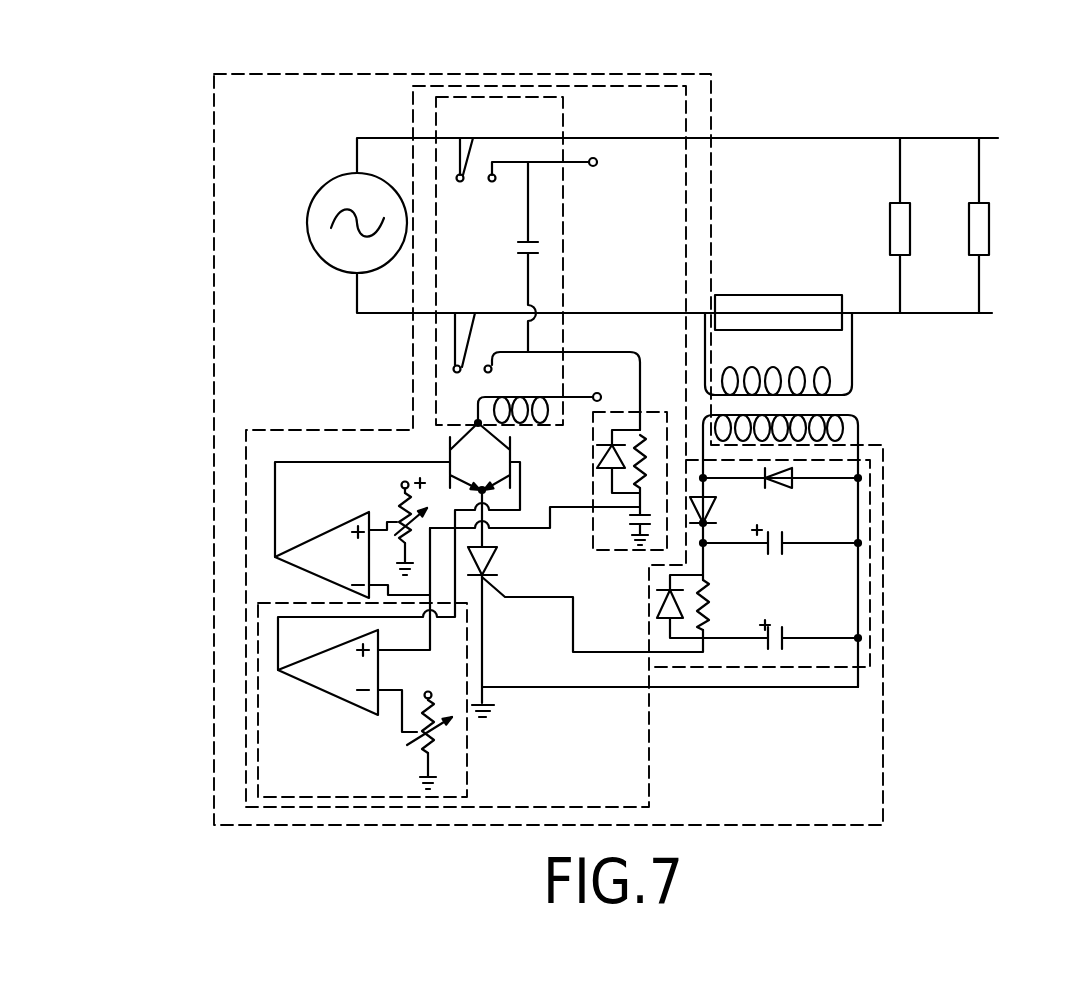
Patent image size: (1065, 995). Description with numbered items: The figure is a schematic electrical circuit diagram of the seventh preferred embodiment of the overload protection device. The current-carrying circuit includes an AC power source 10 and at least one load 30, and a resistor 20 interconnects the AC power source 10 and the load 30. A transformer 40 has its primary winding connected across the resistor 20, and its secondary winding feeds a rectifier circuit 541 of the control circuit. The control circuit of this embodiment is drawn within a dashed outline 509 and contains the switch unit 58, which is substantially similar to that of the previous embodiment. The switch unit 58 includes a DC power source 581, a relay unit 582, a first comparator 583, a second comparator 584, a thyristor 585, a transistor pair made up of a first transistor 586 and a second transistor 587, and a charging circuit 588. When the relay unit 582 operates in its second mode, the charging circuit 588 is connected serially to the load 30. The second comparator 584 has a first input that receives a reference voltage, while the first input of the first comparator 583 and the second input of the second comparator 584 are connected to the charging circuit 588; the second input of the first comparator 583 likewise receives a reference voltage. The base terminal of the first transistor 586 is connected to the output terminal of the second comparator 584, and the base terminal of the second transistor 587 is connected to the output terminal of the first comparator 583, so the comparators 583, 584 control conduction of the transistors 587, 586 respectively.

The AC power source 10 is at (300, 228).
The resistor 20 is at (770, 295).
The load 30 is at (890, 225).
The transformer 40 is at (838, 412).
The switch unit 58 is at (686, 113).
The control circuit housing 509 is at (885, 643).
The rectifier circuit 541 is at (876, 525).
The DC power source 581 is at (593, 158).
The relay unit 582 is at (563, 207).
The first comparator 583 is at (250, 645).
The second comparator 584 is at (318, 547).
The thyristor 585 is at (495, 600).
The first transistor 586 is at (450, 447).
The second transistor 587 is at (478, 423).
The charging circuit 588 is at (612, 552).